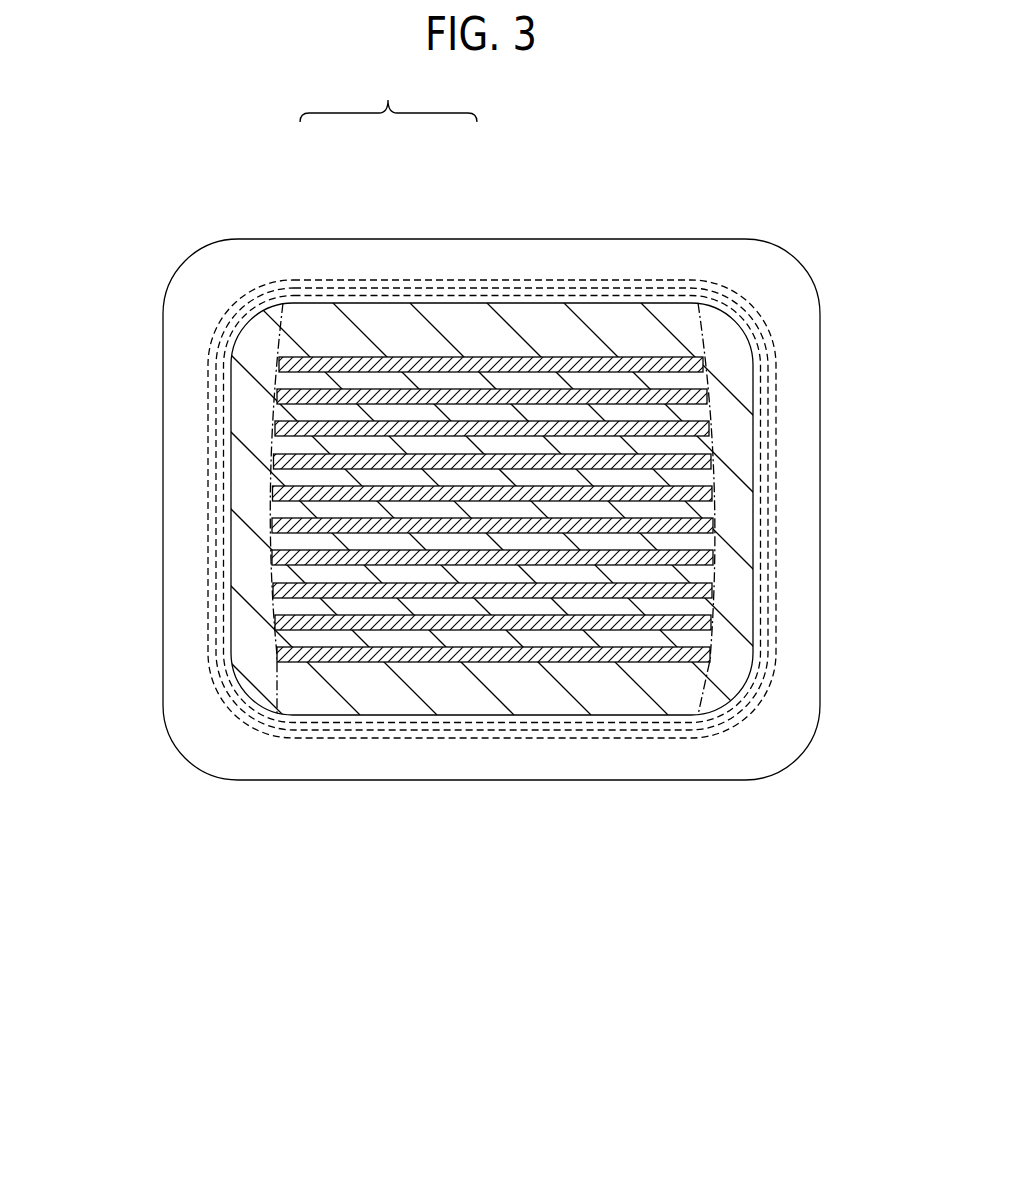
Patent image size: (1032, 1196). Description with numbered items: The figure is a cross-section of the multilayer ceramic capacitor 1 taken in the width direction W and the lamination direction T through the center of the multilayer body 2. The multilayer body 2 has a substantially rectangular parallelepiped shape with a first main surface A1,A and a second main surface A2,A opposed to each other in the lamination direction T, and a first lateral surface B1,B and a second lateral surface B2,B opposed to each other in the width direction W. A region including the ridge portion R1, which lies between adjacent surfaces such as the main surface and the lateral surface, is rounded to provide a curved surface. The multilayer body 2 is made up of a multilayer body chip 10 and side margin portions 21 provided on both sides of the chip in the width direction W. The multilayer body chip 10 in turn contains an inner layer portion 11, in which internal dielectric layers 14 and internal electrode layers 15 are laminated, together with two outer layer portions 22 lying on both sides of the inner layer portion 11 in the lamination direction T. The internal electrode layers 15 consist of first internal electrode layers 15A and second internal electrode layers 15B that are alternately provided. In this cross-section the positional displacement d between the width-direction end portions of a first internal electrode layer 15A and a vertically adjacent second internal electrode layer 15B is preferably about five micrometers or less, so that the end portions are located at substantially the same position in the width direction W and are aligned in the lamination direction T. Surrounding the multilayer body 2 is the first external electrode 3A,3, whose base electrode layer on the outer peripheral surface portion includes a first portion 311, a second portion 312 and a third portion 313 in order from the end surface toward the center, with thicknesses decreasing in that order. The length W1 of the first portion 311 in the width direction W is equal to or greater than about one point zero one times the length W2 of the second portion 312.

The multilayer ceramic capacitor 1 is at (806, 175).
The multilayer body 2 is at (388, 99).
The side margin portion 21 is at (260, 323).
The multilayer body chip 10 is at (456, 318).
The ridge portion R1 is at (342, 303).
The outer layer portion 22 is at (418, 310).
The first main surface A1,A is at (635, 303).
The second main surface A2,A is at (477, 716).
The first lateral surface B1,B is at (231, 594).
The second lateral surface B2,B is at (758, 585).
The first portion 311 is at (777, 374).
The second portion 312 is at (768, 395).
The third portion 313 is at (760, 428).
The first external electrode 3A,3 is at (660, 780).
The inner layer portion 11 is at (363, 507).
The internal electrode layer 15 is at (385, 509).
The first internal electrode layer 15A is at (277, 362).
The second internal electrode layer 15B is at (273, 397).
The internal dielectric layer 14 is at (414, 455).
The lamination direction T is at (913, 342).
The width direction W is at (340, 1012).
The length of the first portion in the width direction W1 is at (206, 670).
The length of the second portion in the width direction W2 is at (213, 685).
The positional displacement d is at (272, 560).